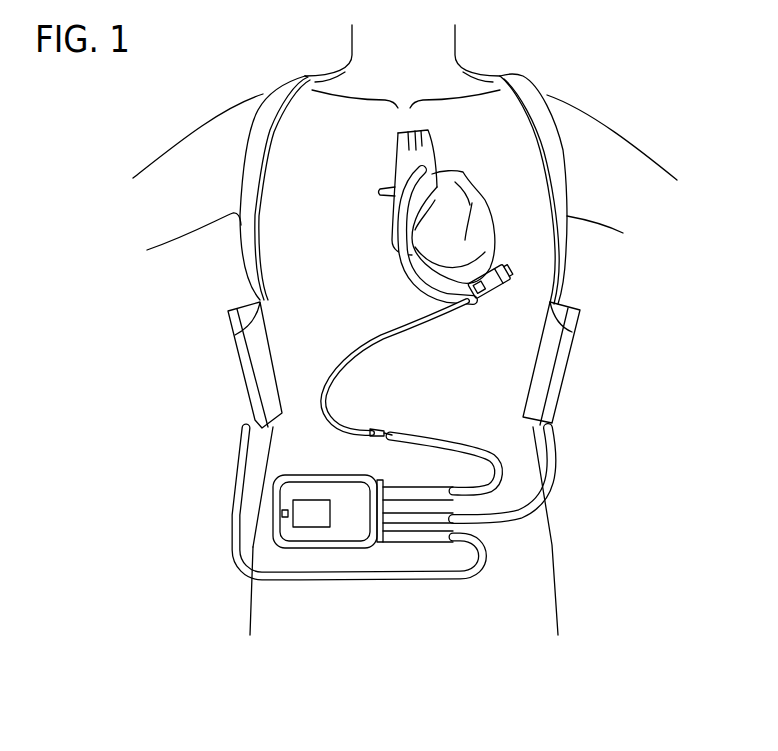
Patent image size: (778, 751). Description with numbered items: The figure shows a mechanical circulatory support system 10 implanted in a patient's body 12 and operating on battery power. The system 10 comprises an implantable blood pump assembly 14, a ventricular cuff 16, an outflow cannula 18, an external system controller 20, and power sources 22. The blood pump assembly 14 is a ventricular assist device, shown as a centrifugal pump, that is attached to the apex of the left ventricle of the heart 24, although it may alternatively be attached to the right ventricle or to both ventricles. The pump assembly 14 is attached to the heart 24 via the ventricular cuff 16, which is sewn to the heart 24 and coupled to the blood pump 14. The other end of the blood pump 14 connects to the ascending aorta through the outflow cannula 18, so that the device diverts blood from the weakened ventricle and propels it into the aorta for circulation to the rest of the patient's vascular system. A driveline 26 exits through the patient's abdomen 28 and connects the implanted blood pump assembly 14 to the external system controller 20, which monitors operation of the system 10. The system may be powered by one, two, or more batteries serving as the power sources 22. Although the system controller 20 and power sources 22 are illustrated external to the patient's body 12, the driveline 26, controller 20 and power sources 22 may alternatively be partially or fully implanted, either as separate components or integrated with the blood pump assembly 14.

The mechanical circulatory support system 10 is at (581, 294).
The patient's body 12 is at (208, 154).
The implantable blood pump assembly 14 is at (503, 262).
The ventricular cuff 16 is at (497, 243).
The outflow cannula 18 is at (403, 262).
The external system controller 20 is at (277, 508).
The power sources 22 is at (243, 375).
The heart 24 is at (476, 210).
The driveline 26 is at (395, 333).
The patient's abdomen 28 is at (380, 432).